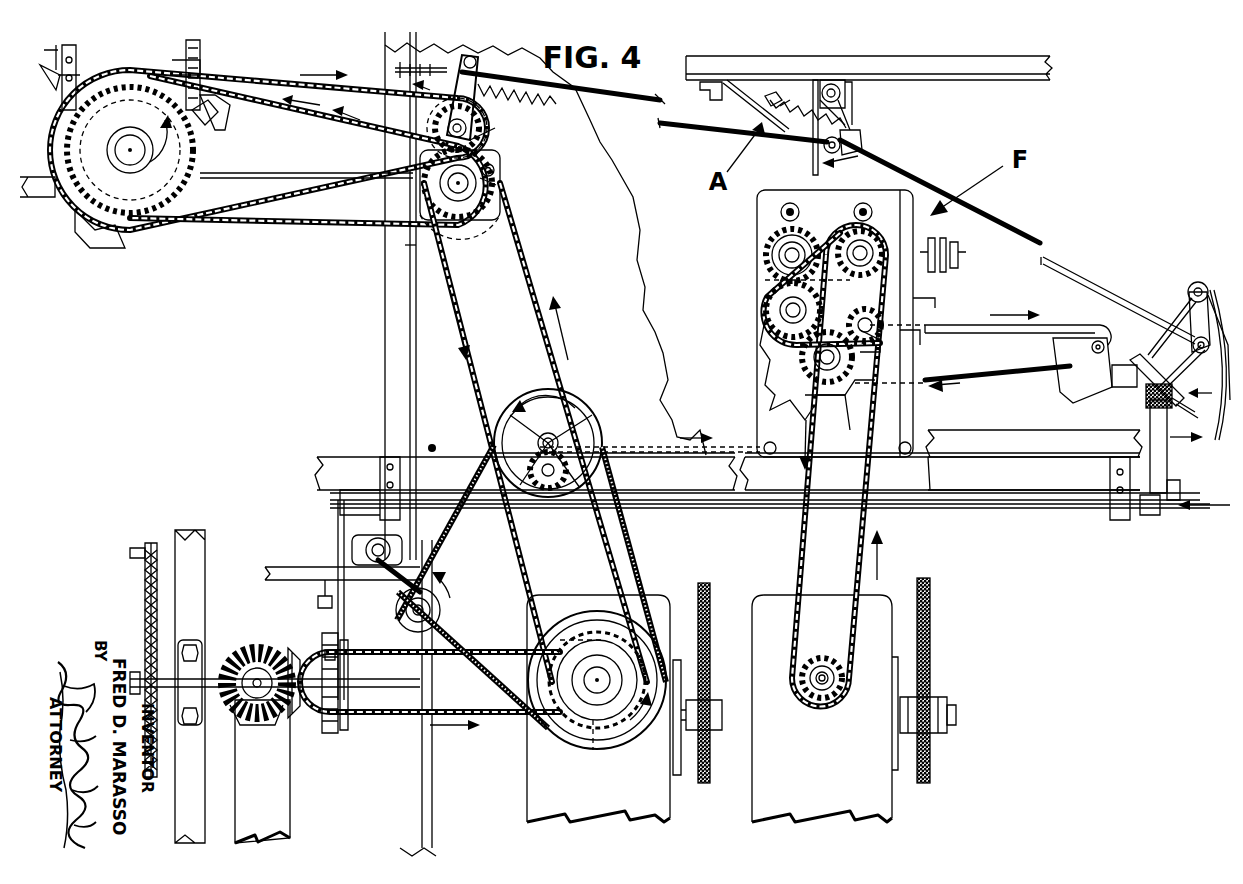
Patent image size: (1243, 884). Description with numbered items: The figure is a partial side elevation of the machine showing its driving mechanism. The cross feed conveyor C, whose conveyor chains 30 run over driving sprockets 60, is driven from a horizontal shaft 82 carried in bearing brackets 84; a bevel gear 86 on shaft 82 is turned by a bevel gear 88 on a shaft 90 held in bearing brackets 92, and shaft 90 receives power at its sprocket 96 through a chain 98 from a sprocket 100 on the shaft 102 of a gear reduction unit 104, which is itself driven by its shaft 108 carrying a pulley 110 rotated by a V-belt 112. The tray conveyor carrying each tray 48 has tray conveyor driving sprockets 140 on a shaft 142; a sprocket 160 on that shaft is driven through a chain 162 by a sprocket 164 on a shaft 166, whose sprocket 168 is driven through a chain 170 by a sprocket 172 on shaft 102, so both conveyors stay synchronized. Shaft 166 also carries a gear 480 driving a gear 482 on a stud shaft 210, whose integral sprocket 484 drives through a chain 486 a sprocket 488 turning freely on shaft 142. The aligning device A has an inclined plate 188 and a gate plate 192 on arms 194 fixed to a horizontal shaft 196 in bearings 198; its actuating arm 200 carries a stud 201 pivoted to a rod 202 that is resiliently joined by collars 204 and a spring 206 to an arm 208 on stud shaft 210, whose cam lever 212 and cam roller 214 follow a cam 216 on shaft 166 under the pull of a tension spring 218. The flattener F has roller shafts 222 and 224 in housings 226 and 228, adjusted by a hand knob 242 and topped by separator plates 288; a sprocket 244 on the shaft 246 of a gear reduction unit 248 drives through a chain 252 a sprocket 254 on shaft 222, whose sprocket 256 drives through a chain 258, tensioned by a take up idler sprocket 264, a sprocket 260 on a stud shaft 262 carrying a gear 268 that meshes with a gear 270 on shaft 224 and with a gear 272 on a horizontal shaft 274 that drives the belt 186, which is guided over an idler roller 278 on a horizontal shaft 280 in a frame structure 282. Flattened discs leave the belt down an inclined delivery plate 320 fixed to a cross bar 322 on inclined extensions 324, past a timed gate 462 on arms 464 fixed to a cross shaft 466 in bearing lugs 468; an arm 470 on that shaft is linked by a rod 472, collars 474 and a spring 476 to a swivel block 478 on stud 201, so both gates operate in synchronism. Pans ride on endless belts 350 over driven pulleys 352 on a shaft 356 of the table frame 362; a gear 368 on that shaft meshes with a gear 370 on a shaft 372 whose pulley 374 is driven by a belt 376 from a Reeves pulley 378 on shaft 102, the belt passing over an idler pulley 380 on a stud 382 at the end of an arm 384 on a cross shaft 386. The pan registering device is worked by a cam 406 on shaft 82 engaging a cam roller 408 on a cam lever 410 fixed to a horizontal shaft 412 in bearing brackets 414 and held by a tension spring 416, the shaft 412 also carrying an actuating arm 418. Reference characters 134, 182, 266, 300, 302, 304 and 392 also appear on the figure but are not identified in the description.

The conveyor chains 30 is at (150, 543).
The tray 48 is at (222, 112).
The driving sprockets 60 is at (146, 620).
The horizontal shaft 82 is at (372, 700).
The bearing brackets 84 is at (432, 722).
The bevel gear 86 is at (292, 720).
The bevel gear 88 is at (245, 714).
The shaft 90 is at (262, 645).
The bearing brackets 92 is at (288, 830).
The sprocket 96 is at (325, 730).
The chain 98 is at (360, 748).
The sprocket 100 is at (572, 716).
The shaft 102 is at (615, 742).
The gear reduction unit 104 is at (662, 598).
The shaft 108 is at (678, 775).
The pulley 110 is at (712, 700).
The V-belt 112 is at (710, 595).
The post 134 is at (200, 55).
The tray conveyor driving sprockets 140 is at (185, 62).
The shaft 142 is at (130, 148).
The sprocket 160 is at (205, 138).
The chain 162 is at (255, 224).
The sprocket 164 is at (405, 222).
The shaft 166 is at (494, 190).
The sprocket 168 is at (458, 225).
The chain 170 is at (448, 310).
The sprocket 172 is at (592, 620).
The post 182 is at (74, 62).
The belt 186 is at (1005, 334).
The inclined plate 188 is at (745, 120).
The gate plate 192 is at (885, 170).
The arms 194 is at (862, 140).
The horizontal shaft 196 is at (845, 92).
The bearings 198 is at (850, 82).
The actuating arm 200 is at (848, 117).
The stud 201 is at (824, 150).
The rod 202 is at (645, 98).
The collars 204 is at (472, 60).
The spring 206 is at (385, 58).
The arm 208 is at (485, 120).
The stud shaft 210 is at (487, 134).
The cam lever 212 is at (495, 166).
The cam roller 214 is at (497, 182).
The cam 216 is at (410, 246).
The tension spring 218 is at (590, 96).
The shaft 222 is at (880, 248).
The shaft 224 is at (780, 254).
The housing 226 is at (766, 236).
The housing 228 is at (913, 400).
The hand knob 242 is at (948, 246).
The sprocket 244 is at (822, 656).
The shaft 246 is at (805, 690).
The gear reduction unit 248 is at (878, 600).
The chain 252 is at (810, 560).
The sprocket 254 is at (888, 270).
The sprocket 256 is at (937, 300).
The chain 258 is at (930, 378).
The sprocket 260 is at (790, 346).
The stud shaft 262 is at (766, 306).
The take up idler sprocket 264 is at (882, 322).
The bracket 266 is at (896, 342).
The gear 268 is at (765, 326).
The gear 270 is at (760, 270).
The gear 272 is at (802, 362).
The horizontal shaft 274 is at (845, 400).
The idler roller 278 is at (1098, 340).
The horizontal shaft 280 is at (1075, 365).
The frame structure 282 is at (1085, 392).
The separator plates 288 is at (780, 208).
The nut 300 is at (957, 712).
The hub 302 is at (945, 698).
The blade 304 is at (930, 602).
The inclined delivery plate 320 is at (1150, 402).
The cross bar 322 is at (1218, 380).
The inclined extensions 324 is at (1148, 386).
The endless belts 350 is at (955, 500).
The driven pulleys 352 is at (630, 485).
The shaft 356 is at (548, 490).
The table frame 362 is at (1165, 508).
The gear 368 is at (500, 448).
The gear 370 is at (565, 405).
The shaft 372 is at (580, 432).
The pulley 374 is at (620, 450).
The belt 376 is at (480, 710).
The Reeves pulley 378 is at (593, 752).
The idler pulley 380 is at (436, 572).
The stud 382 is at (441, 612).
The arm 384 is at (400, 592).
The cross shaft 386 is at (360, 550).
The rail 392 is at (1045, 462).
The cam 406 is at (343, 730).
The cam roller 408 is at (326, 648).
The cam lever 410 is at (338, 567).
The horizontal shaft 412 is at (1005, 500).
The bearing brackets 414 is at (1118, 522).
The tension spring 416 is at (318, 600).
The actuating arm 418 is at (1145, 432).
The timed gate 462 is at (1172, 490).
The arms 464 is at (1200, 282).
The cross shaft 466 is at (1188, 284).
The bearing lugs 468 is at (1180, 340).
The arm 470 is at (1172, 306).
The rod 472 is at (1052, 260).
The collars 474 is at (852, 150).
The spring 476 is at (795, 100).
The swivel block 478 is at (792, 146).
The gear 480 is at (470, 240).
The gear 482 is at (440, 150).
The sprocket 484 is at (400, 142).
The chain 486 is at (300, 192).
The sprocket 488 is at (95, 212).